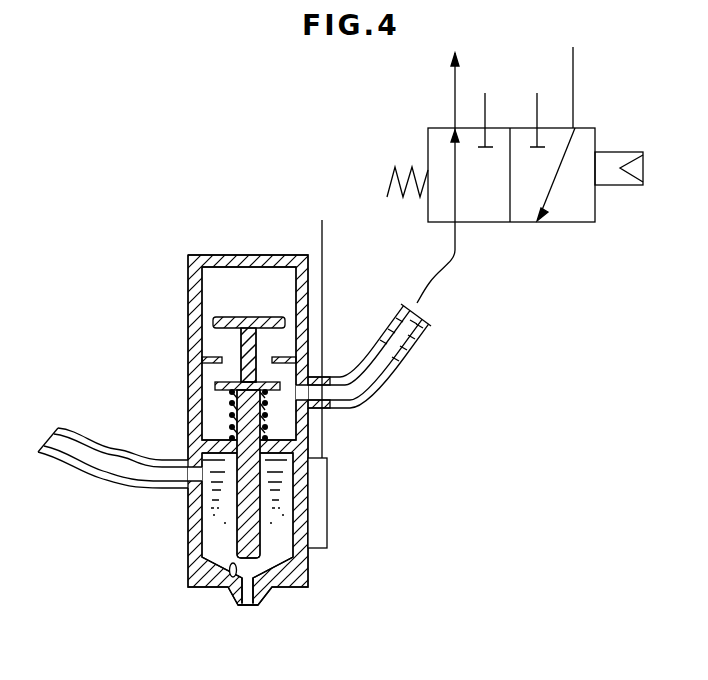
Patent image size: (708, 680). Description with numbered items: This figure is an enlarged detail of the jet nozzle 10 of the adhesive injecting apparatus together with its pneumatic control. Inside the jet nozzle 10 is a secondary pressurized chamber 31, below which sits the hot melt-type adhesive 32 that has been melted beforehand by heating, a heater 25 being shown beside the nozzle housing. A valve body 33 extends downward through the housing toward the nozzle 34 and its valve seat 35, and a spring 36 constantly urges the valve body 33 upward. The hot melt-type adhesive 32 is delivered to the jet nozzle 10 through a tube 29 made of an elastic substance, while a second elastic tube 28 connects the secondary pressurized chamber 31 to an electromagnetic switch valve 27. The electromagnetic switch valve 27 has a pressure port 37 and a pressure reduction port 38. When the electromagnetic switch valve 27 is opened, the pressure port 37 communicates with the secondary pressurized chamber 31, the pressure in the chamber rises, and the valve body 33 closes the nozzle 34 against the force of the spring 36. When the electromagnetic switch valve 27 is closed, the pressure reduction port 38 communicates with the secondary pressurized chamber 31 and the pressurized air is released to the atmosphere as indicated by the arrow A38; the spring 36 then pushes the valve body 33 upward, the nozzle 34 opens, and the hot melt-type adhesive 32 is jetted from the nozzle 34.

The jet nozzle 10 is at (190, 540).
The heater 25 is at (328, 518).
The electromagnetic switch valve 27 is at (592, 128).
The tube made of elastic substance 28 is at (390, 397).
The tube made of elastic substance 29 is at (80, 435).
The secondary pressurized chamber 31 is at (250, 277).
The hot melt-type adhesive 32 is at (210, 508).
The valve body 33 is at (258, 530).
The nozzle 34 is at (253, 605).
The valve seat 35 is at (232, 577).
The spring 36 is at (265, 430).
The pressure port 37 is at (538, 222).
The pressure reduction port 38 is at (453, 214).
The arrow A38 is at (453, 90).